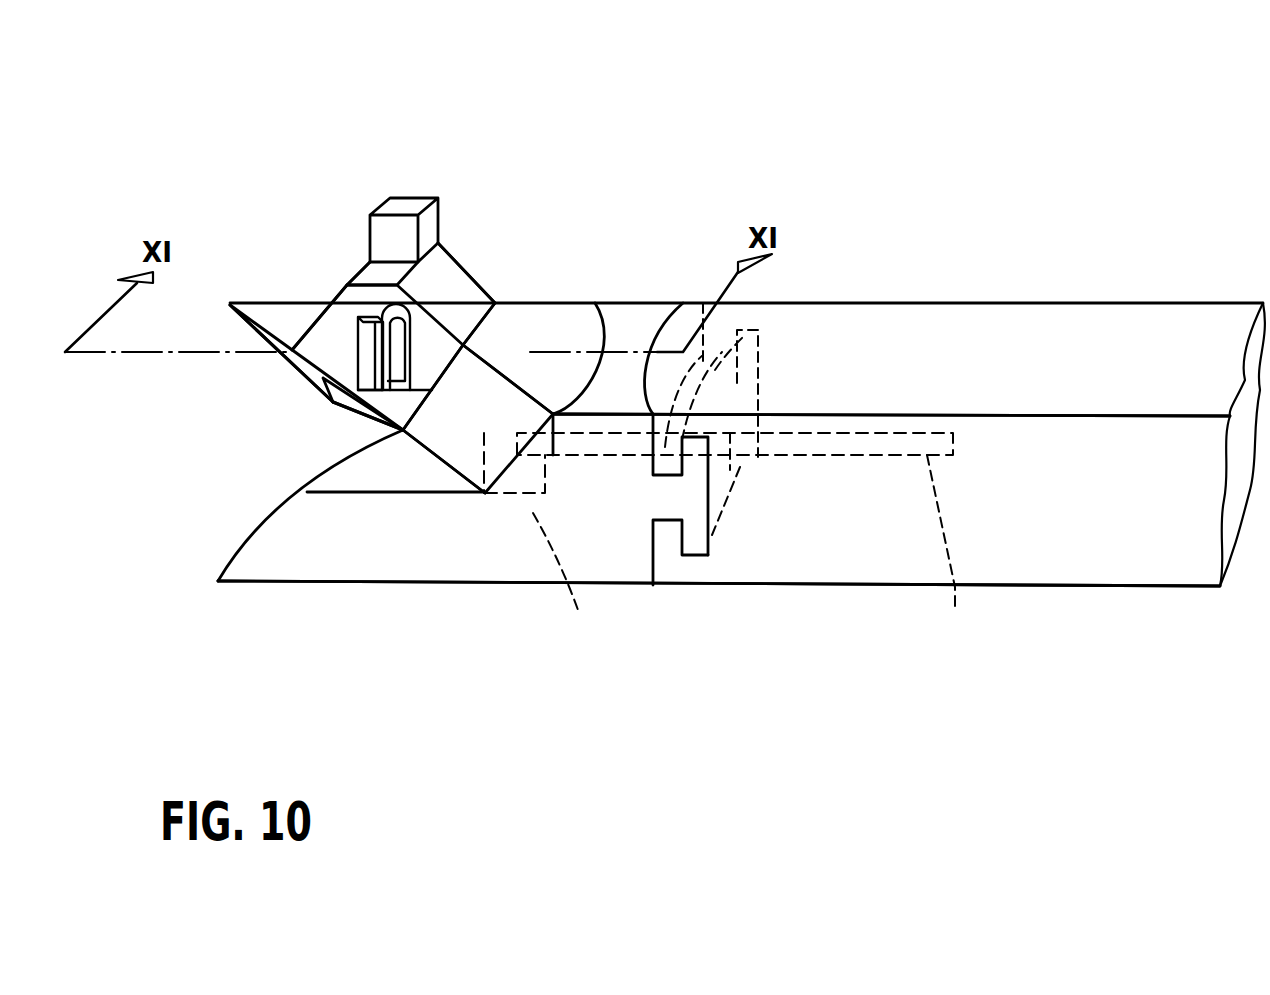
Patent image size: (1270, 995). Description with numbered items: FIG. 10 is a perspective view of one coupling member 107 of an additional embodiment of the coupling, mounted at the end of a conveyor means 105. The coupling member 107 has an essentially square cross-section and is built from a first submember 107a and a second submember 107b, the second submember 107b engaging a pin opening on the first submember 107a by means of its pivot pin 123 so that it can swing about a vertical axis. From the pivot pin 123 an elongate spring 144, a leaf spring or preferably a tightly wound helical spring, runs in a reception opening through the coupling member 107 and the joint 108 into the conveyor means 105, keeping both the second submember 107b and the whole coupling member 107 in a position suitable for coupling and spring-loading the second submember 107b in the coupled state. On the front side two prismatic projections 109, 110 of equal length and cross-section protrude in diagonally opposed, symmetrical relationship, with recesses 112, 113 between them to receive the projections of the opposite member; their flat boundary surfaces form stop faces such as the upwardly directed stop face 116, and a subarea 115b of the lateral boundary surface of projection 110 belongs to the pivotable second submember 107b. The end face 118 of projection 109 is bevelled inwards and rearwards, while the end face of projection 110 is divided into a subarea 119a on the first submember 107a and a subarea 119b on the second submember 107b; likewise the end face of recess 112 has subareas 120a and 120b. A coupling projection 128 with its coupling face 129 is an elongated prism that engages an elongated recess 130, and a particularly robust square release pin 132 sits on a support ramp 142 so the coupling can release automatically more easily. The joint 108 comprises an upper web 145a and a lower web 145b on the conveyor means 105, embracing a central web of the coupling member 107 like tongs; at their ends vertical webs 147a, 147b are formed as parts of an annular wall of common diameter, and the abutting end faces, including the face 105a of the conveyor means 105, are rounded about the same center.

The conveyor means 105 is at (1097, 365).
The front face of bar 105a is at (625, 480).
The coupling member 107 is at (535, 610).
The first submember 107a is at (404, 552).
The second submember 107b is at (480, 388).
The joint 108 is at (768, 605).
The prismatic projection 109 is at (290, 558).
The prismatic projection 110 is at (265, 312).
The recess 112 is at (352, 465).
The recess 113 is at (343, 425).
The subarea of lateral boundary surface 115b is at (350, 302).
The stop face 116 is at (416, 482).
The end face 118 is at (245, 537).
The subarea of end face 119a is at (330, 398).
The subarea of end face 119b is at (318, 360).
The subarea of end face 120a is at (463, 437).
The subarea of end face 120b is at (518, 334).
The pivot pin 123 is at (569, 582).
The coupling projection 128 is at (300, 322).
The coupling face 129 is at (392, 350).
The recess 130 is at (405, 365).
The release pin 132 is at (408, 200).
The support ramp 142 is at (350, 302).
The spring 144 is at (952, 553).
The upper web 145a is at (705, 412).
The lower web 145b is at (700, 565).
The vertical web 147a is at (672, 447).
The vertical web 147b is at (666, 533).